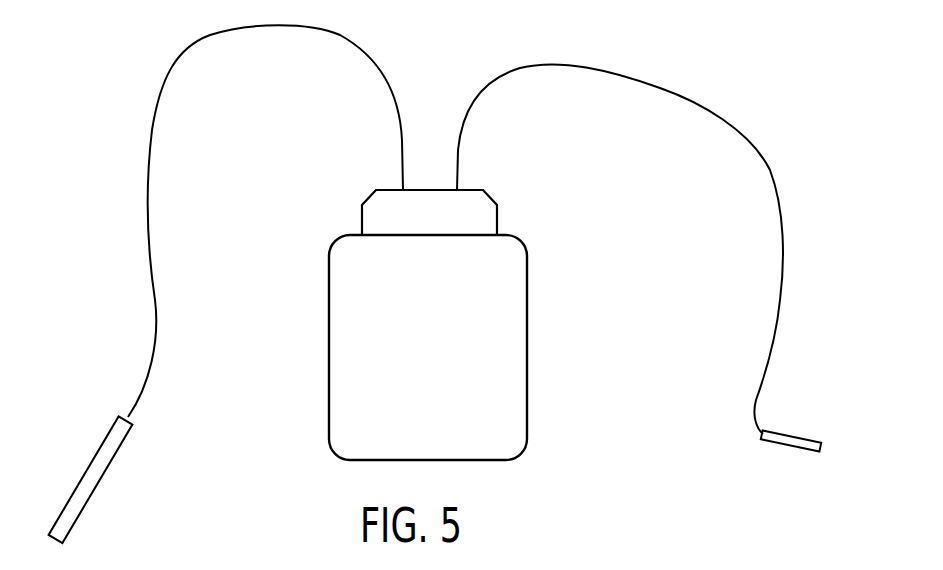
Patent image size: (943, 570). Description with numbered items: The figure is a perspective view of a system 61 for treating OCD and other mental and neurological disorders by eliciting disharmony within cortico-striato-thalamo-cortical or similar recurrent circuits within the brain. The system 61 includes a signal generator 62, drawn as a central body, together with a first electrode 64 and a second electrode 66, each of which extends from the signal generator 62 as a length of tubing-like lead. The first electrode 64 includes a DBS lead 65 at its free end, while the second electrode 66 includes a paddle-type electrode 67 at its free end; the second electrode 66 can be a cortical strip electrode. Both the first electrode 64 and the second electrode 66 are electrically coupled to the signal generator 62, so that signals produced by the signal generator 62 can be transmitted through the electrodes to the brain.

The system 61 is at (452, 48).
The signal generator 62 is at (365, 333).
The first electrode 64 is at (716, 114).
The DBS lead 65 is at (790, 448).
The second electrode 66 is at (172, 68).
The paddle-type electrode 67 is at (85, 475).